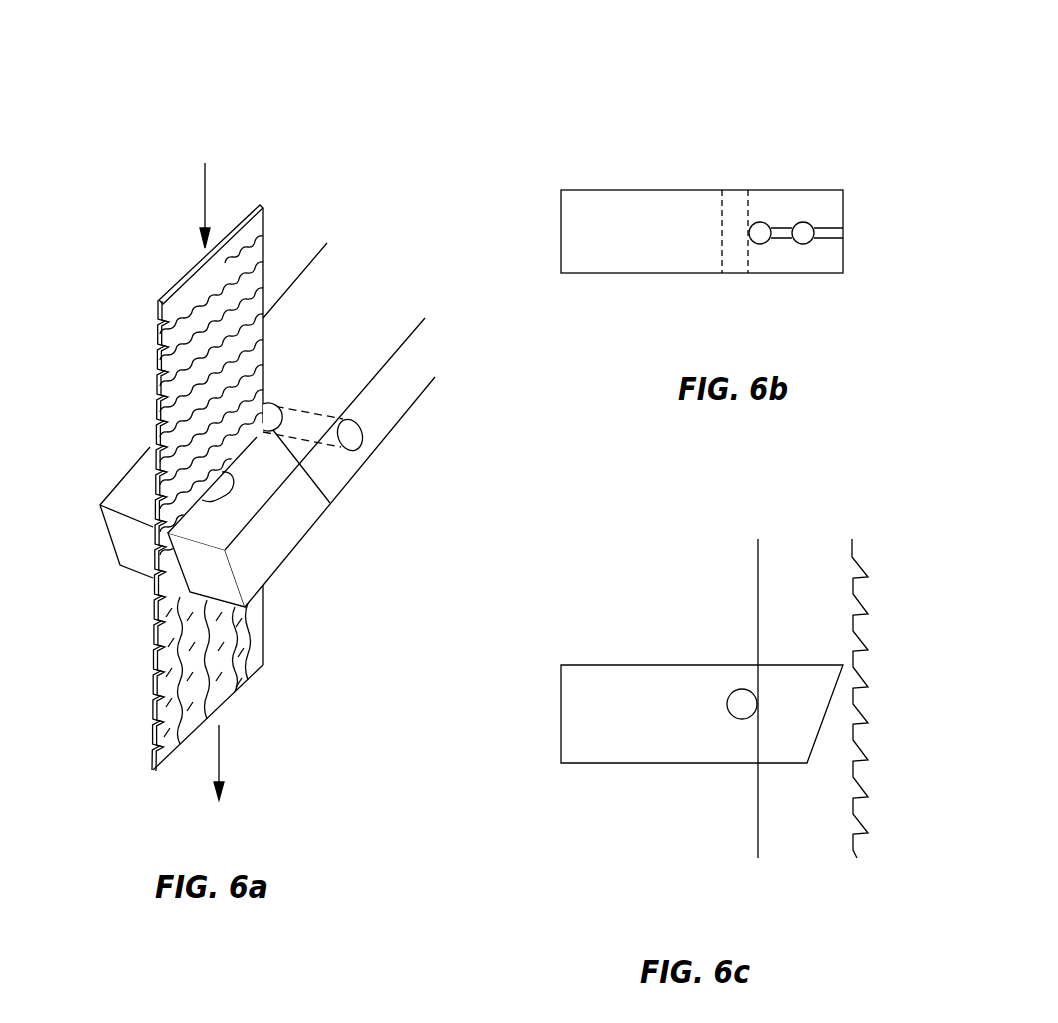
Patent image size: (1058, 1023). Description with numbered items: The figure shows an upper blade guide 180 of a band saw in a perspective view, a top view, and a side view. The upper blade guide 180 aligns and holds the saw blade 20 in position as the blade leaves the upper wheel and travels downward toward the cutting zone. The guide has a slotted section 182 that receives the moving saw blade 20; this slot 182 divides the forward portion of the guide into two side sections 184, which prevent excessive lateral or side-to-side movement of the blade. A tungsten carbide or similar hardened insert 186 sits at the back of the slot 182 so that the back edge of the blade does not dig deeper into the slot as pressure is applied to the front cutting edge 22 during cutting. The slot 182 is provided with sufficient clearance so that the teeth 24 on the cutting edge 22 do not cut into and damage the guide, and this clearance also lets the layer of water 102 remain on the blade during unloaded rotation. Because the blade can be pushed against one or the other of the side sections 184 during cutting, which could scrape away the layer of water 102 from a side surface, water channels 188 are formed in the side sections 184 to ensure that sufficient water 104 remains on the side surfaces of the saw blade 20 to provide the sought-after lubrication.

In FIG. 6a, the saw blade 20 is at (172, 293).
In FIG. 6c, the saw blade 20 is at (773, 615).
In FIG. 6a, the cutting edge 22 is at (153, 392).
In FIG. 6a, the teeth 24 is at (152, 718).
In FIG. 6a, the layer of water 102 is at (264, 258).
In FIG. 6a, the water 104 is at (223, 687).
In FIG. 6a, the upper blade guide 180 is at (300, 96).
In FIG. 6b, the upper blade guide 180 is at (655, 274).
In FIG. 6c, the upper blade guide 180 is at (640, 664).
In FIG. 6a, the slotted section 182 is at (127, 606).
In FIG. 6b, the slotted section 182 is at (833, 232).
In FIG. 6a, the side sections 184 is at (87, 520).
In FIG. 6b, the side sections 184 is at (803, 222).
In FIG. 6c, the side sections 184 is at (817, 687).
In FIG. 6a, the tungsten carbide insert 186 is at (363, 433).
In FIG. 6b, the tungsten carbide insert 186 is at (737, 265).
In FIG. 6c, the tungsten carbide insert 186 is at (733, 714).
In FIG. 6a, the water channels 188 is at (202, 500).
In FIG. 6b, the water channels 188 is at (760, 222).